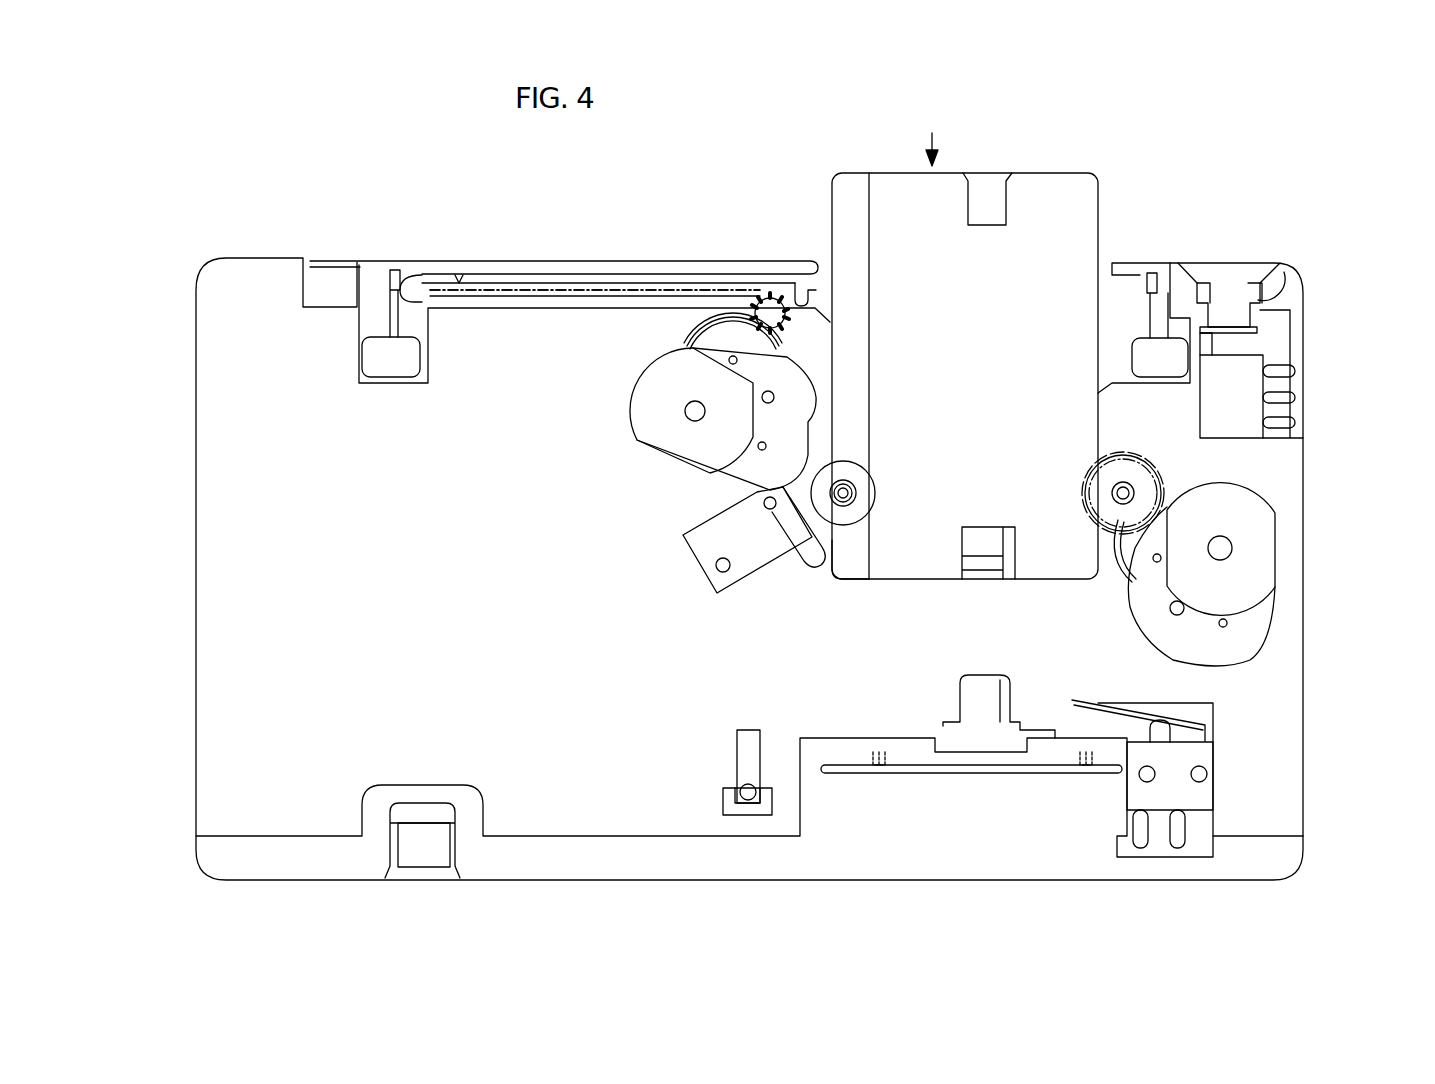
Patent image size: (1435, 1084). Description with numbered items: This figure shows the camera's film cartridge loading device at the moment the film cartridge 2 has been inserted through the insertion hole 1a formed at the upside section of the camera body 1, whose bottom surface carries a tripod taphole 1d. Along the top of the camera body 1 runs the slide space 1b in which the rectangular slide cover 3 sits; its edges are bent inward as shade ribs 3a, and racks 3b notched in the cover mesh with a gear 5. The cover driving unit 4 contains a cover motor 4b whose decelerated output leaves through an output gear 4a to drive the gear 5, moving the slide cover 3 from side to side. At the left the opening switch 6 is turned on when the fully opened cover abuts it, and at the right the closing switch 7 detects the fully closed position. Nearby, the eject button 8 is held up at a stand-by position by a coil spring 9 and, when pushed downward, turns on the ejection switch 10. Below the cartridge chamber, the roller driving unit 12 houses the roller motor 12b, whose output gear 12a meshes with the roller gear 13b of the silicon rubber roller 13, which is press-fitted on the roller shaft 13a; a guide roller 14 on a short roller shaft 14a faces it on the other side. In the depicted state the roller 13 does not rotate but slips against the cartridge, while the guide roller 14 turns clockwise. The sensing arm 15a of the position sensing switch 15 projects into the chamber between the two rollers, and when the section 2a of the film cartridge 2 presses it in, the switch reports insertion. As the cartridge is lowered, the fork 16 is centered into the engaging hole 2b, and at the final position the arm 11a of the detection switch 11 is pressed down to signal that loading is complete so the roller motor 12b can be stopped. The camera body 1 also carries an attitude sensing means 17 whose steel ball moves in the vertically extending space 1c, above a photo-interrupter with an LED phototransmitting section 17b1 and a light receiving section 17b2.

The camera body 1 is at (196, 490).
The insertion hole 1a is at (930, 131).
The slide space 1b is at (504, 300).
The vertically extending space 1c is at (750, 730).
The tripod taphole 1d is at (418, 878).
The film cartridge 2 is at (1073, 197).
The section of the film cartridge 2a is at (836, 545).
The engaging hole 2b is at (963, 580).
The slide cover 3 is at (418, 285).
The shade ribs 3a is at (805, 290).
The racks 3b is at (607, 283).
The cover driving unit 4 is at (733, 472).
The output gear 4a is at (692, 350).
The cover motor 4b is at (634, 411).
The gear 5 is at (765, 308).
The opening switch 6 is at (388, 270).
The closing switch 7 is at (1153, 272).
The eject button 8 is at (1228, 275).
The coil spring 9 is at (1265, 295).
The ejection switch 10 is at (1250, 362).
The detection switch 11 is at (1208, 792).
The arm 11a is at (1085, 700).
The roller driving unit 12 is at (1258, 628).
The output gear 12a is at (1120, 560).
The roller motor 12b is at (1260, 522).
The roller 13 is at (1105, 462).
The roller shaft 13a is at (1112, 492).
The roller gear 13b is at (1146, 470).
The guide roller 14 is at (853, 463).
The short roller shaft 14a is at (850, 490).
The position sensing switch 15 is at (700, 575).
The sensing arm 15a is at (798, 568).
The fork 16 is at (985, 686).
The attitude sensing means 17 is at (745, 817).
The LED phototransmitting section 17b1 is at (738, 792).
The light receiving section 17b2 is at (772, 797).